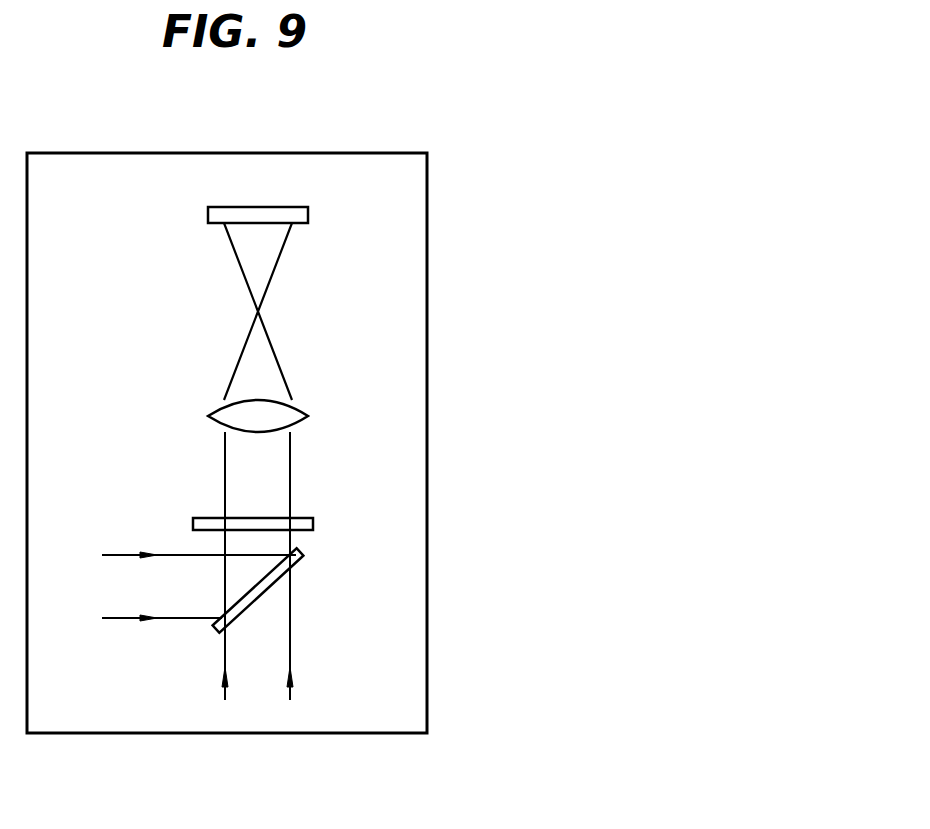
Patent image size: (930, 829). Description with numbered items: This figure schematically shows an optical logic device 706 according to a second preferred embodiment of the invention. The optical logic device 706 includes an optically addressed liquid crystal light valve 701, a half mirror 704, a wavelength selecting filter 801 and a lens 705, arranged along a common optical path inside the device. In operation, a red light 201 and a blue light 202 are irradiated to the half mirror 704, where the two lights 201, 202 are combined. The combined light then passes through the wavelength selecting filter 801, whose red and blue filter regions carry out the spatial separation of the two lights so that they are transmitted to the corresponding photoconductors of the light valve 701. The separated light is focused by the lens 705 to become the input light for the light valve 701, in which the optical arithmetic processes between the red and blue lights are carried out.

The optically addressed liquid crystal light valve 701 is at (309, 213).
The lens 705 is at (305, 409).
The wavelength selecting filter 801 is at (313, 518).
The half mirror 704 is at (303, 556).
The optical logic device 706 is at (427, 625).
The light 202 is at (270, 648).
The light 201 is at (132, 590).